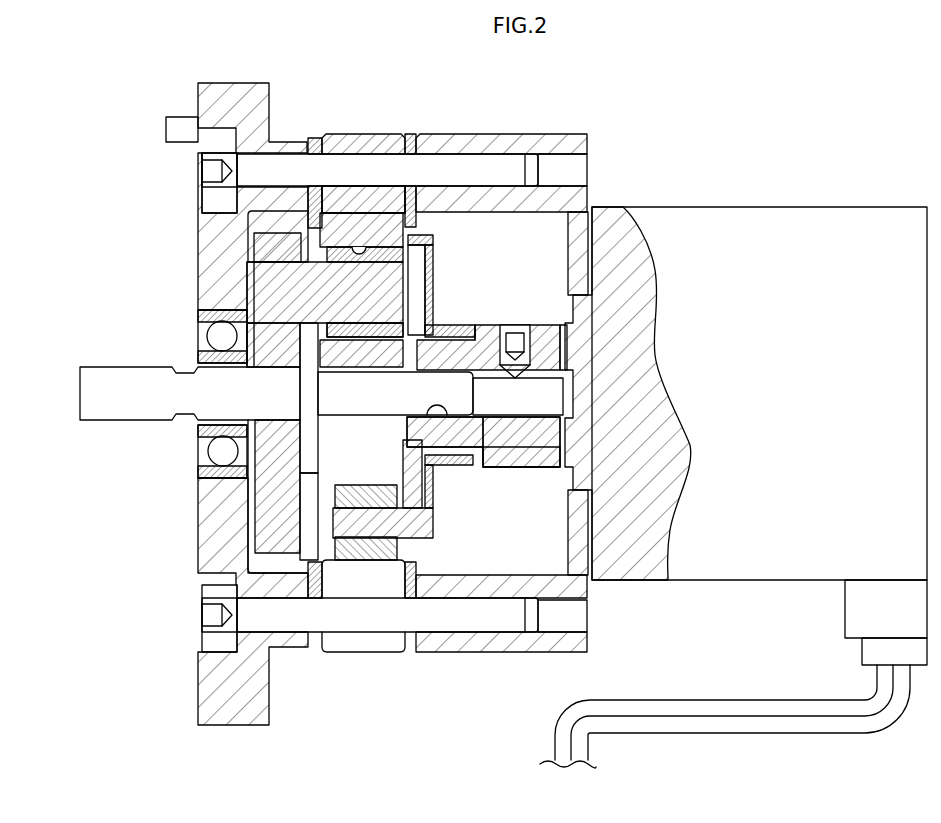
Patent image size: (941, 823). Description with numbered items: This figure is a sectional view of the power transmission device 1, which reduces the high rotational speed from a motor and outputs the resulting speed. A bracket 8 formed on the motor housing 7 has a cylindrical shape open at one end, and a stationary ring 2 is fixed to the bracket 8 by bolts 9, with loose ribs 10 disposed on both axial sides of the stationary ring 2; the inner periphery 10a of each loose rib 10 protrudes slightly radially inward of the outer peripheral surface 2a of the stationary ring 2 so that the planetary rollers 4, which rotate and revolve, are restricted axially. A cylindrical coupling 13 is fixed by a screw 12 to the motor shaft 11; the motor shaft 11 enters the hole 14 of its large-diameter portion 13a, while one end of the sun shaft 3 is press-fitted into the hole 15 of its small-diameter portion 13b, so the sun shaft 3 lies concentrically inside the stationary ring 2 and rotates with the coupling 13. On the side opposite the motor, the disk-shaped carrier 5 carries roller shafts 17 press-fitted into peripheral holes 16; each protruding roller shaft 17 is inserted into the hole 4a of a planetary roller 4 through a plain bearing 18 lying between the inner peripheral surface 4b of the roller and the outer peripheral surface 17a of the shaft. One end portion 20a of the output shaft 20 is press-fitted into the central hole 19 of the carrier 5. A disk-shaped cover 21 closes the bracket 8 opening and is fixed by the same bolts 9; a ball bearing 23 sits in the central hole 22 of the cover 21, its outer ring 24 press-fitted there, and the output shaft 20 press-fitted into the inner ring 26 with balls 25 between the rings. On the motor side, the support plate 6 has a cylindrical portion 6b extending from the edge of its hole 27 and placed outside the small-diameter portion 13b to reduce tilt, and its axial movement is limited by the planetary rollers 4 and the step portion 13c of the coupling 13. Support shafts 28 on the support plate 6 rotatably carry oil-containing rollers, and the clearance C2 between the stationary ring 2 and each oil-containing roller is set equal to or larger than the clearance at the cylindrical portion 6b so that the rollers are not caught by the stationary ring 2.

The power transmission device 1 is at (330, 127).
The stationary ring 2 is at (350, 136).
The outer peripheral surface 2a is at (317, 222).
The sun shaft 3 is at (393, 405).
The planetary rollers 4 is at (377, 238).
The hole 4a is at (327, 335).
The inner peripheral surface 4b is at (366, 245).
The carrier 5 is at (267, 528).
The support plate 6 is at (437, 254).
The cylindrical portion 6b is at (452, 330).
The housing 7 is at (634, 235).
The bracket 8 is at (457, 138).
The bolts 9 is at (433, 165).
The loose ribs 10 is at (313, 137).
The inner periphery 10a is at (308, 246).
The motor shaft 11 is at (535, 458).
The screw 12 is at (540, 322).
The coupling 13 is at (560, 398).
The large-diameter portion 13a is at (540, 478).
The small-diameter portion 13b is at (497, 445).
The step portion 13c is at (477, 328).
The hole 14 is at (545, 402).
The hole 15 is at (445, 458).
The peripheral holes 16 is at (278, 292).
The roller shafts 17 is at (260, 270).
The outer peripheral surface 17a is at (343, 338).
The plain bearing 18 is at (377, 338).
The central hole 19 is at (210, 515).
The output shaft 20 is at (100, 375).
The end portion 20a is at (294, 398).
The cover 21 is at (225, 95).
The central hole 22 is at (200, 321).
The ball bearing 23 is at (171, 467).
The outer ring 24 is at (187, 487).
The balls 25 is at (208, 452).
The inner ring 26 is at (200, 432).
The hole 27 is at (410, 292).
The support shafts 28 is at (383, 525).
The second clearance C2 is at (347, 525).